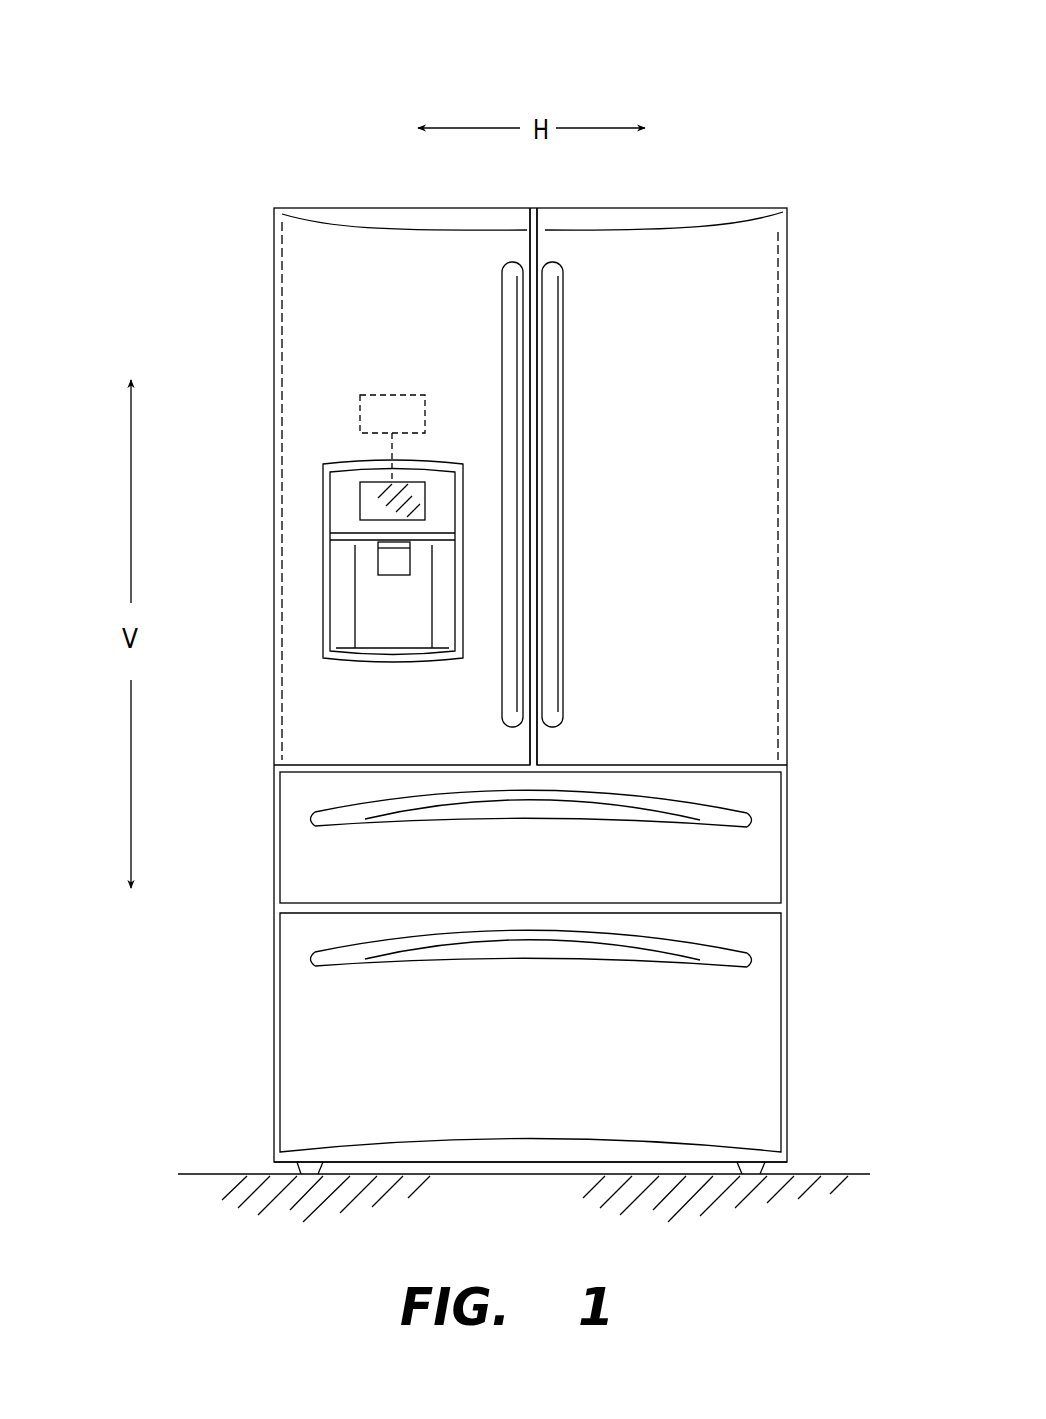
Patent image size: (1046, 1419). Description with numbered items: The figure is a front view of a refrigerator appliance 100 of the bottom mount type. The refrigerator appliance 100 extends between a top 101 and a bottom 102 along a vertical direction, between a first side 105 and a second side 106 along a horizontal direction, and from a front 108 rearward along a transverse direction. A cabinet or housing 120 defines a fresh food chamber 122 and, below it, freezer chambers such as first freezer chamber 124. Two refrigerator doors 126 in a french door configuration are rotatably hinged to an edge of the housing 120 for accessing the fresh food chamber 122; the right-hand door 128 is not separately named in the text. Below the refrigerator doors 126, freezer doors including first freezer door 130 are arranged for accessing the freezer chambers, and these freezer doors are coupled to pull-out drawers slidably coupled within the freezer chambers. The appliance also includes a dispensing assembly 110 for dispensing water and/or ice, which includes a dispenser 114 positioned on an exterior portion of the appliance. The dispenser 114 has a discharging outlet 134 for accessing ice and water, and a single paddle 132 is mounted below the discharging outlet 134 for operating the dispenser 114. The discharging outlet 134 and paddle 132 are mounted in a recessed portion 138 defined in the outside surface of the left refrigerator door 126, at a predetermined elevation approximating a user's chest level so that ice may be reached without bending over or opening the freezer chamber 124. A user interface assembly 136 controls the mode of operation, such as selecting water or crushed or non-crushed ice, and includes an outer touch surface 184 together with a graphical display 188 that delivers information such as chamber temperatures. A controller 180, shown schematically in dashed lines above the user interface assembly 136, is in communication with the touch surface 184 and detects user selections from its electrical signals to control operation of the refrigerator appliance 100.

The refrigerator appliance 100 is at (316, 95).
The top 101 is at (795, 208).
The bottom 102 is at (792, 1160).
The first side 105 is at (276, 200).
The second side 106 is at (785, 201).
The front 108 is at (715, 585).
The dispensing assembly 110 is at (348, 437).
The dispenser 114 is at (388, 618).
The cabinet or housing 120 is at (273, 977).
The fresh food chamber 122 is at (740, 490).
The first freezer chamber 124 is at (740, 860).
The refrigerator doors 126 is at (307, 313).
The right refrigerator door 128 is at (760, 358).
The first freezer door 130 is at (740, 1048).
The paddle 132 is at (384, 560).
The discharging outlet 134 is at (391, 582).
The user interface assembly 136 is at (323, 508).
The recessed portion 138 is at (412, 632).
The controller 180 is at (392, 392).
The touch surface 184 is at (432, 503).
The display 188 is at (406, 494).